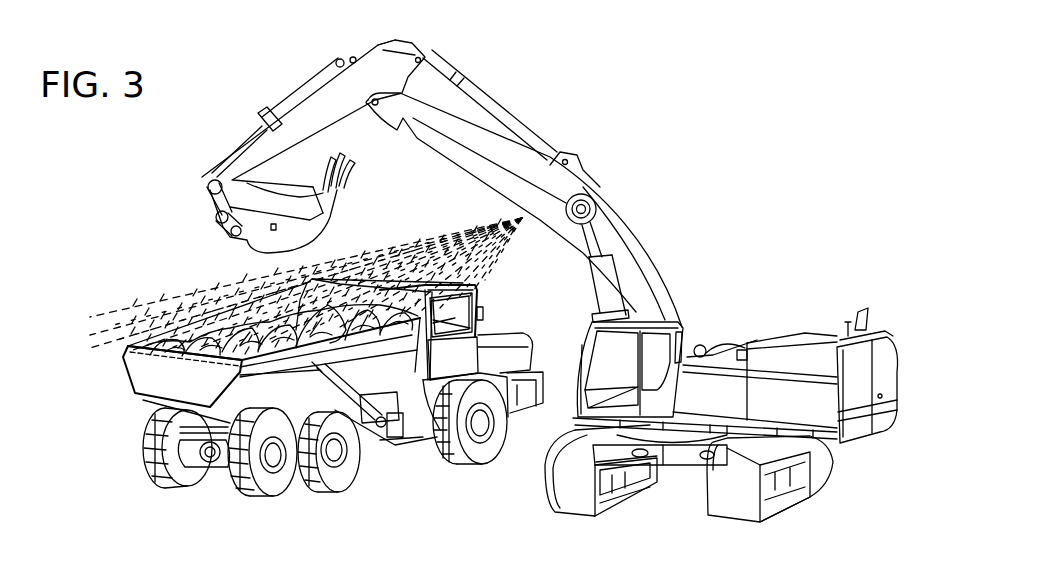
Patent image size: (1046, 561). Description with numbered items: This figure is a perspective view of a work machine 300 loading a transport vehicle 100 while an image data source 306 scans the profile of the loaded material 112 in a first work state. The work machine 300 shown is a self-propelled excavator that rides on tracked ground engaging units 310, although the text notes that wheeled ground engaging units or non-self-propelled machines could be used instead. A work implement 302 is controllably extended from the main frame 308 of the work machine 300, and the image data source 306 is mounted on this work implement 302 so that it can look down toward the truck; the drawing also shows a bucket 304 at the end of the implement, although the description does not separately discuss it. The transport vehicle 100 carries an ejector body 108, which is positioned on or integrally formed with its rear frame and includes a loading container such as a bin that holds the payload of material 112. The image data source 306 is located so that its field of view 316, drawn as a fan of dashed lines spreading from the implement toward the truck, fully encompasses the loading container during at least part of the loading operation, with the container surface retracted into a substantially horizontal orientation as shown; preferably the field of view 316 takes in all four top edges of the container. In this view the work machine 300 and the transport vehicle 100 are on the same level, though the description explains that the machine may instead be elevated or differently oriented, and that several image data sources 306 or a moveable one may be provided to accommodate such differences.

The transport vehicle 100 is at (77, 372).
The ejector body 108 is at (163, 337).
The material 112 is at (247, 345).
The work machine 300 is at (697, 167).
The work implement 302 is at (305, 88).
The bucket 304 is at (253, 238).
The image data source 306 is at (530, 212).
The main frame 308 is at (880, 357).
The tracked ground engaging units 310 is at (807, 500).
The field of view 316 is at (412, 247).